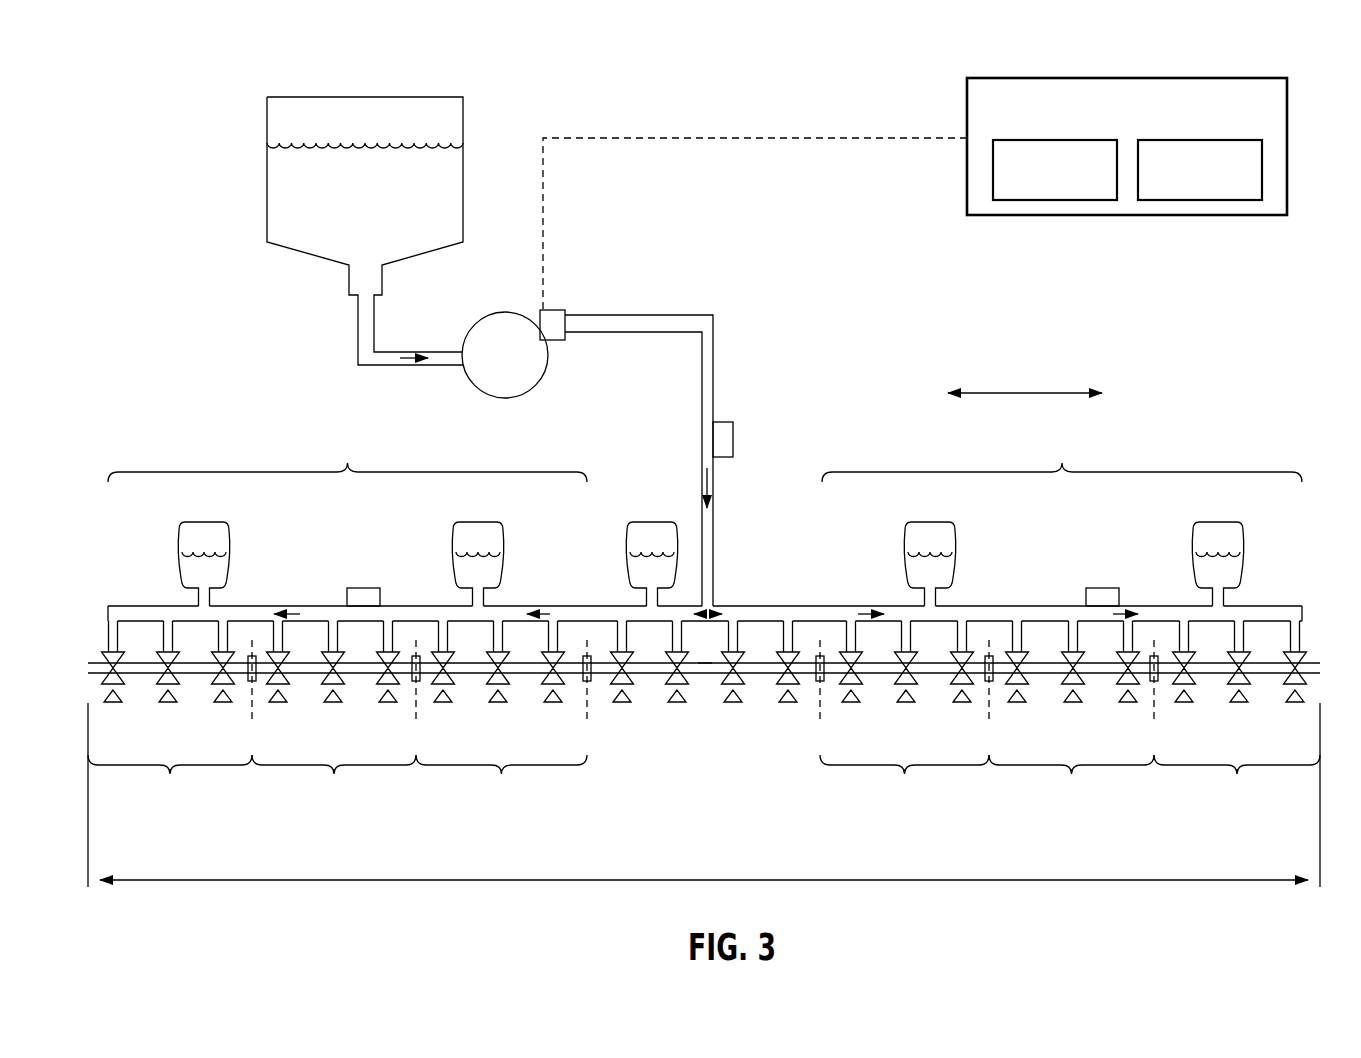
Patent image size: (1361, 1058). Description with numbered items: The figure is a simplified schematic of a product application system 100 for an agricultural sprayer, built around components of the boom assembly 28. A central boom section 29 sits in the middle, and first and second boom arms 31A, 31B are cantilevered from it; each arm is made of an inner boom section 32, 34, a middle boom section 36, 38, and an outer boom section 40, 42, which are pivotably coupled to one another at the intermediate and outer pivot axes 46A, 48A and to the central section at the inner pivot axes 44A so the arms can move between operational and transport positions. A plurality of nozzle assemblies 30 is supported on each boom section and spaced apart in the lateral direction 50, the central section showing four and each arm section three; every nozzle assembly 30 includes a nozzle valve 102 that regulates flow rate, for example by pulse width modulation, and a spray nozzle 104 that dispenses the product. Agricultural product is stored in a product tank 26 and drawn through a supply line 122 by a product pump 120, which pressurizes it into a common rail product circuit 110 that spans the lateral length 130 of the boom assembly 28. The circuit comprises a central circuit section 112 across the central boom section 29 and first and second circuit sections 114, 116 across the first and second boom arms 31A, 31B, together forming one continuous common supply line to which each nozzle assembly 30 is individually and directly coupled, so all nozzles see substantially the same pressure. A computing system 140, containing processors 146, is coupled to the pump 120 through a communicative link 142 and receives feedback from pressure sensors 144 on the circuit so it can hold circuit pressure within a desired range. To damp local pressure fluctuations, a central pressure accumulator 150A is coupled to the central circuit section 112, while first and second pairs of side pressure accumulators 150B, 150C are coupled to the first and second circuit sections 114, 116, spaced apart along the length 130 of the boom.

The product application system 100 is at (134, 124).
The product tank 26 is at (376, 221).
The supply line 122 is at (357, 341).
The product pump 120 is at (488, 371).
The computing system 140 is at (972, 74).
The processor 146 is at (1038, 189).
The communicative link 142 is at (718, 137).
The pressure sensor 144 is at (736, 444).
The lateral direction 50 is at (1023, 392).
The second circuit section 116 is at (347, 453).
The first circuit section 114 is at (1062, 453).
The second pair of side pressure accumulators 150C is at (208, 530).
The central pressure accumulator 150A is at (656, 532).
The first pair of side pressure accumulators 150B is at (934, 530).
The common rail product circuit 110 is at (724, 539).
The central circuit section 112 is at (757, 611).
The nozzle valve 102 is at (101, 659).
The spray nozzle 104 is at (113, 713).
The nozzle assembly 30 is at (162, 709).
The outer pivot axis 48A is at (251, 711).
The intermediate pivot axis 46A is at (415, 711).
The inner pivot axis 44A is at (586, 711).
The central boom section 29 is at (706, 678).
The outer boom section 42 is at (170, 783).
The middle boom section 38 is at (334, 783).
The inner boom section 34 is at (501, 783).
The inner boom section 32 is at (904, 783).
The middle boom section 36 is at (1071, 783).
The outer boom section 40 is at (1237, 783).
The boom assembly 28 is at (720, 786).
The second boom arm 31B is at (305, 830).
The first boom arm 31A is at (1117, 830).
The lateral length 130 is at (604, 880).